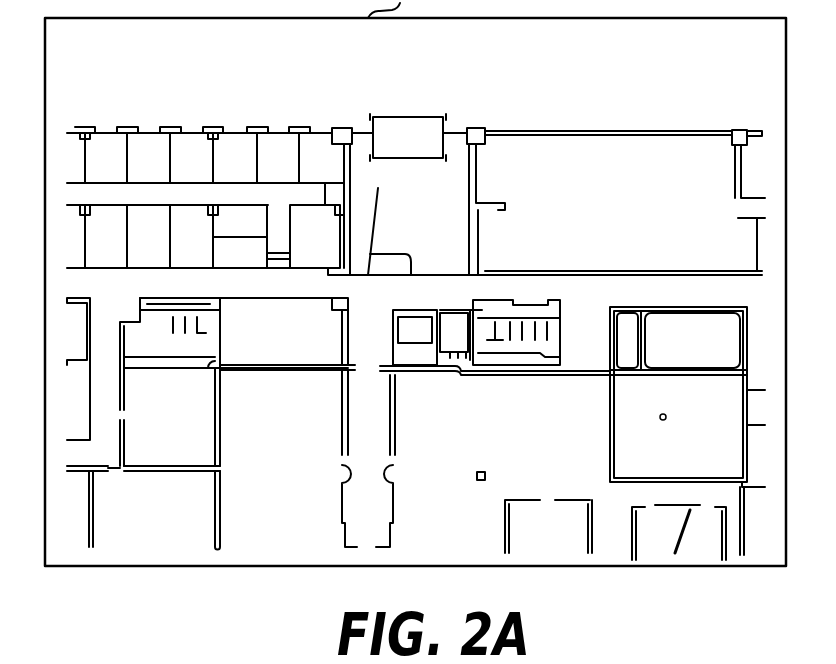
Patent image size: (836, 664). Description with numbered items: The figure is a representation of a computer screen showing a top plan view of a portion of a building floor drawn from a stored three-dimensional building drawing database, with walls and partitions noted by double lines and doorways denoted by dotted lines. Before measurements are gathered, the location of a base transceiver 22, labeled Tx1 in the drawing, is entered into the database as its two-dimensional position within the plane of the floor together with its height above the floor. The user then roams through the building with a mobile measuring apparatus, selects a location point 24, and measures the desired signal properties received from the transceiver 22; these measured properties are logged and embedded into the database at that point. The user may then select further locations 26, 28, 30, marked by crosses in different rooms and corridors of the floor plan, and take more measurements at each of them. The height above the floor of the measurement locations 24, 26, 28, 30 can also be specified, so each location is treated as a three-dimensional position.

The base transceiver 22 is at (658, 419).
The location point 24 is at (449, 435).
The measurement location 26 is at (264, 507).
The measurement location 28 is at (167, 398).
The measurement location 30 is at (300, 314).
The transmitter Tx1 is at (686, 409).